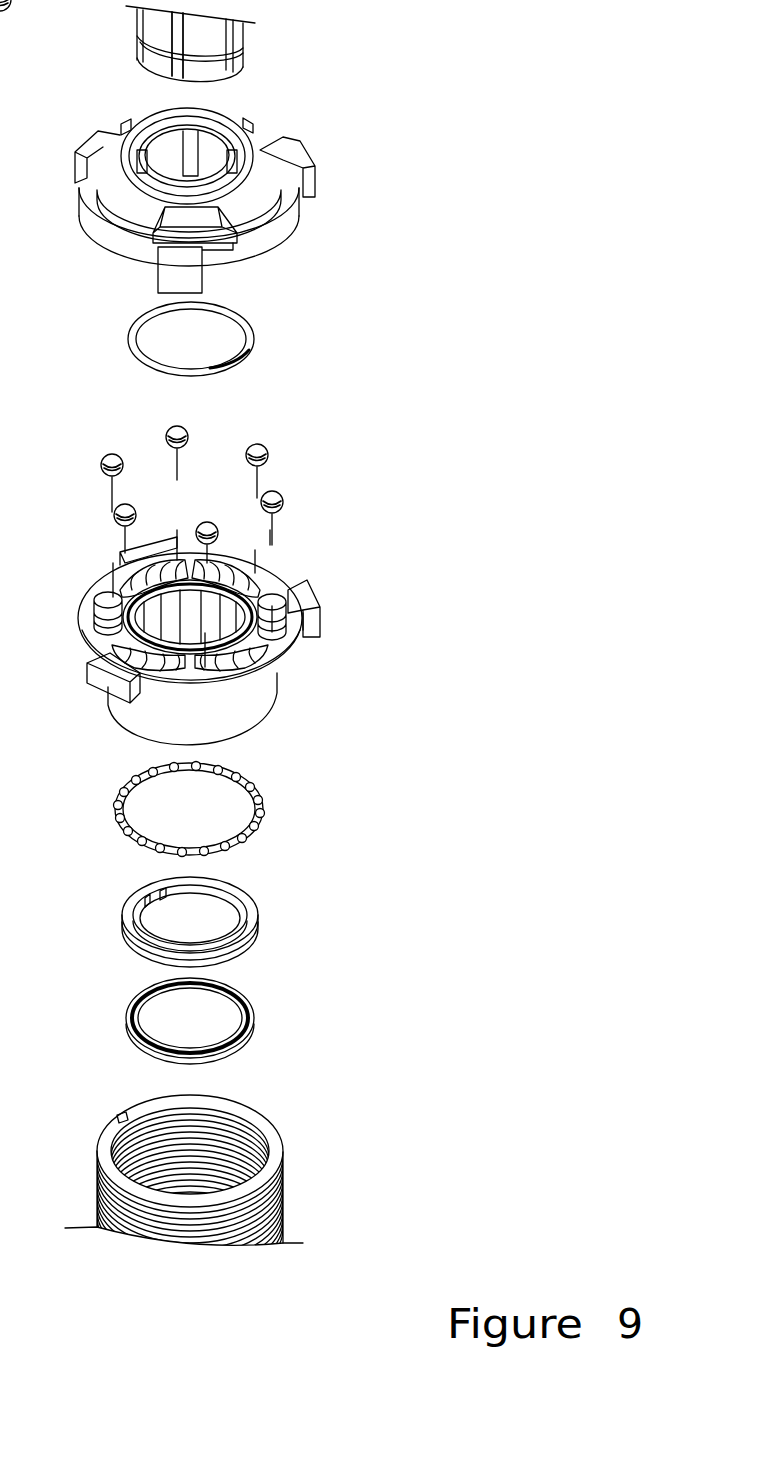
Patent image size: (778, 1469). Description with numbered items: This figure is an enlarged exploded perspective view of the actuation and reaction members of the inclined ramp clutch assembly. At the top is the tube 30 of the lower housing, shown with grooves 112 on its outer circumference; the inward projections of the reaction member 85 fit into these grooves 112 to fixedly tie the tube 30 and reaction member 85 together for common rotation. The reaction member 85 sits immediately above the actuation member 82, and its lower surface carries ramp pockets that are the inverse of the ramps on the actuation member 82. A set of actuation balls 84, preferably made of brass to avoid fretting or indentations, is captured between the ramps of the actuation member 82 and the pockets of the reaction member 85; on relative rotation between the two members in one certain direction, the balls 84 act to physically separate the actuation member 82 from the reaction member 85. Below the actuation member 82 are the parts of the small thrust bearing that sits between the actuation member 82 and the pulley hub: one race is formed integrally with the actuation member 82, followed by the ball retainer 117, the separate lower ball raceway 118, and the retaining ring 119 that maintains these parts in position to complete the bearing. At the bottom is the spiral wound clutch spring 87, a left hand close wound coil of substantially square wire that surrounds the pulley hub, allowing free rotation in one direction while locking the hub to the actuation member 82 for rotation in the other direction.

The tube 30 is at (150, 62).
The grooves 112 is at (247, 37).
The reaction member 85 is at (290, 218).
The actuation balls 84 is at (262, 446).
The actuation member 82 is at (287, 657).
The ball retainer 117 is at (265, 807).
The lower ball raceway 118 is at (258, 923).
The retaining ring 119 is at (253, 1027).
The clutch spring 87 is at (284, 1178).